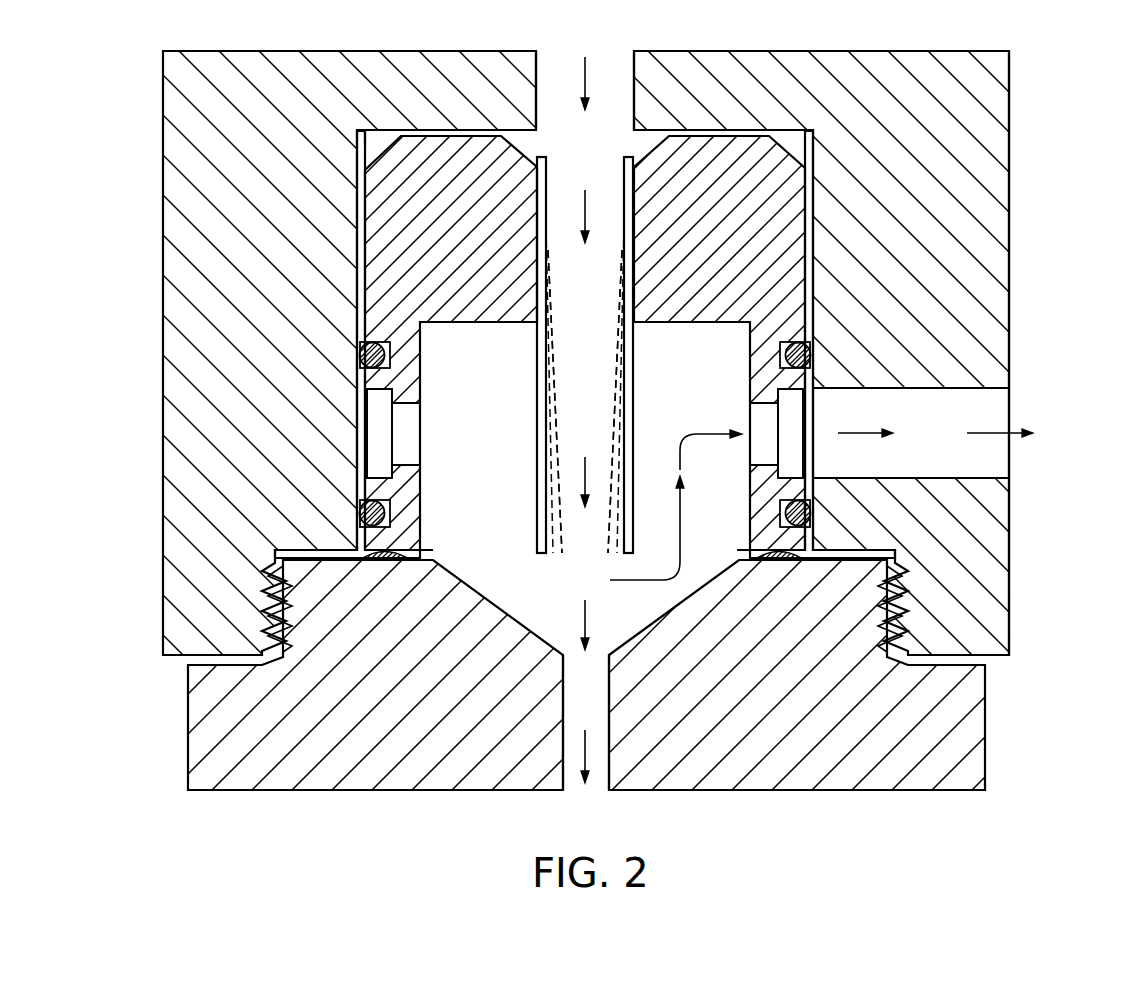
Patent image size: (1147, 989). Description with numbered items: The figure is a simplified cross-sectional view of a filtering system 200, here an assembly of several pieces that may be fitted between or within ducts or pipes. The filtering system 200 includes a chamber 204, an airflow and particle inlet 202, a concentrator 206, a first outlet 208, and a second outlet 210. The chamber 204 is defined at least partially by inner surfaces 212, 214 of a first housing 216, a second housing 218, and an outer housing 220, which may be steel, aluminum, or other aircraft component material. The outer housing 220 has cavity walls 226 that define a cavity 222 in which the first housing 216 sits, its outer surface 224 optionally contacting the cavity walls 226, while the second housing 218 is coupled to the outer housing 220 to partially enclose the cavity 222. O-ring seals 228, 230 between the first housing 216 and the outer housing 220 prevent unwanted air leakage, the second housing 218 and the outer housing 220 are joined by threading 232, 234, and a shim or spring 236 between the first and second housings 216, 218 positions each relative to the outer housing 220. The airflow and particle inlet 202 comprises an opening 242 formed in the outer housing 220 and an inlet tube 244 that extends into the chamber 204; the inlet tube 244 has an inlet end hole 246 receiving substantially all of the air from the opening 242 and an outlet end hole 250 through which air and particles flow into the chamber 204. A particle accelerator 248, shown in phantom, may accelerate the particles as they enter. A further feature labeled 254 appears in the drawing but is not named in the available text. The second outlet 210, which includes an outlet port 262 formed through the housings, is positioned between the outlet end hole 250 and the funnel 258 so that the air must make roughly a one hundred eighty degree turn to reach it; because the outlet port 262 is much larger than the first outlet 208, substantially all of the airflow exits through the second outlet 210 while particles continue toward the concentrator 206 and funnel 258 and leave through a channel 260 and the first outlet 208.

The filtering system 200 is at (1031, 129).
The airflow and particle inlet 202 is at (571, 127).
The chamber 204 is at (500, 417).
The concentrator 206 is at (458, 570).
The first outlet 208 is at (597, 787).
The second outlet 210 is at (753, 415).
The inner surface 212 is at (426, 362).
The inner surface 214 is at (565, 648).
The first housing 216 is at (367, 253).
The second housing 218 is at (272, 780).
The outer housing 220 is at (165, 336).
The cavity 222 is at (366, 145).
The outer surface 224 is at (388, 150).
The cavity walls 226 is at (806, 145).
The o-ring seal 228 is at (360, 355).
The o-ring seal 230 is at (360, 513).
The threading 232 is at (283, 623).
The threading 234 is at (262, 613).
The shim or spring 236 is at (783, 557).
The opening 242 is at (611, 62).
The inlet tube 244 is at (628, 230).
The inlet end hole 246 is at (588, 157).
The particle accelerator 248 is at (538, 550).
The outlet end hole 250 is at (593, 560).
The tapered bore 254 is at (551, 330).
The funnel 258 is at (707, 575).
The channel 260 is at (587, 715).
The outlet port 262 is at (862, 418).